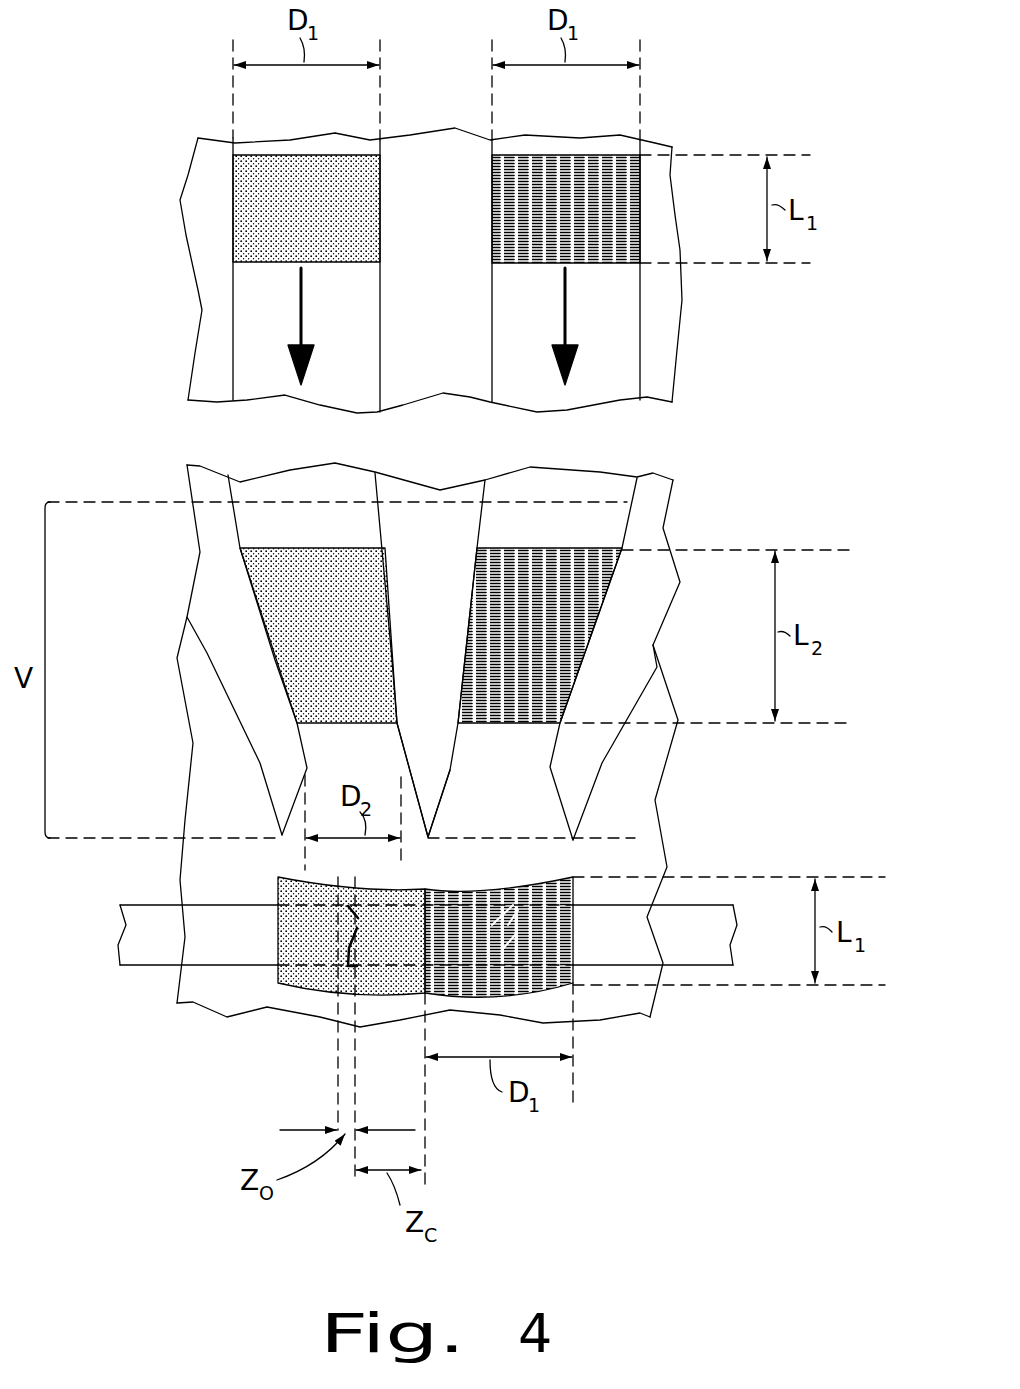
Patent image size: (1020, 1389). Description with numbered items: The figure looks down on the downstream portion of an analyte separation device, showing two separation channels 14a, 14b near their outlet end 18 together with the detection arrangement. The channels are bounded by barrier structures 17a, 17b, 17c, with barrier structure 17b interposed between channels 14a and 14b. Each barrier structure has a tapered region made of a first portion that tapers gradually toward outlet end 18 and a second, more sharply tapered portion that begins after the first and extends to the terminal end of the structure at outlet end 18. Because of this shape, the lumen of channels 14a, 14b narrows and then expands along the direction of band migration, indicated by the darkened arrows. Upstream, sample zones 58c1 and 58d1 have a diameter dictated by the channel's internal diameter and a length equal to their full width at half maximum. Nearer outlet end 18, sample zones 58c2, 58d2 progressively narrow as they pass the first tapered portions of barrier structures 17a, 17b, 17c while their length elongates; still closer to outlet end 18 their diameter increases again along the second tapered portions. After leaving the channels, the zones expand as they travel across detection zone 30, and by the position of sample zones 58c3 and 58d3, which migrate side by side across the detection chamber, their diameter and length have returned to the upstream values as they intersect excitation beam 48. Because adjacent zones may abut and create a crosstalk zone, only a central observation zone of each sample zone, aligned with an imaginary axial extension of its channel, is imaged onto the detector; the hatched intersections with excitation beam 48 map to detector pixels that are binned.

The sample zone 58c1 is at (247, 203).
The sample zone 58d1 is at (615, 158).
The sample zone 58c2 is at (277, 557).
The sample zone 58d2 is at (587, 547).
The sample zone 58c3 is at (293, 977).
The sample zone 58d3 is at (575, 985).
The channel 14a is at (295, 483).
The channel 14b is at (573, 483).
The barrier structure 17a is at (204, 578).
The barrier structure 17b is at (430, 498).
The barrier structure 17c is at (660, 540).
The outlet end 18 is at (428, 840).
The excitation beam 48 is at (157, 903).
The detection zone 30 is at (187, 1003).